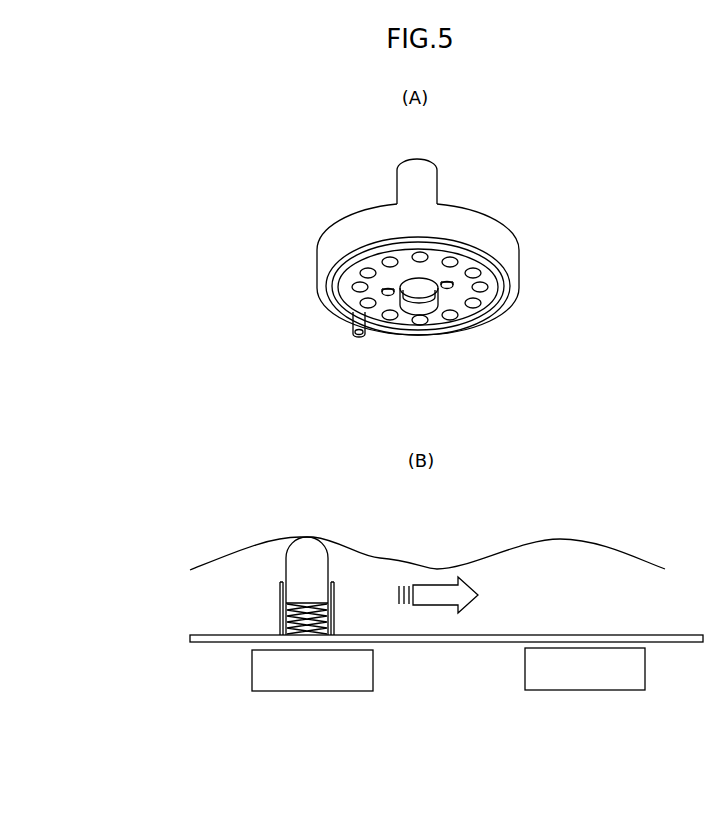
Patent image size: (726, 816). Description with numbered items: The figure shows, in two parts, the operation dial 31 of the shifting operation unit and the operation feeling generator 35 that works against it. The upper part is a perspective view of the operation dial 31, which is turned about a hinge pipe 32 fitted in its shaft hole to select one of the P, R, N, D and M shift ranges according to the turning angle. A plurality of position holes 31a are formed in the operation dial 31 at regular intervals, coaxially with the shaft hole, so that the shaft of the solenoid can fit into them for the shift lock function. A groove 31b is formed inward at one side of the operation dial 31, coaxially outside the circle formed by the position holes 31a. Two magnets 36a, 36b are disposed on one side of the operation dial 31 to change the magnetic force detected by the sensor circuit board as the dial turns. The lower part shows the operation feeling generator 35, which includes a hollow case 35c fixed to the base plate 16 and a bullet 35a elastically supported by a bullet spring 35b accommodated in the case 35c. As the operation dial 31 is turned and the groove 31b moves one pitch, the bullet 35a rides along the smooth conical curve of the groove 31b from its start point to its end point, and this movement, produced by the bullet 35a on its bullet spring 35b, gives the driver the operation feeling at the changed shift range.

The operation dial 31 is at (508, 248).
The position holes 31a is at (456, 264).
The groove 31b is at (518, 293).
The hinge pipe 32 is at (425, 183).
The operation feeling generator 35 is at (355, 337).
The bullet 35a is at (284, 563).
The bullet spring 35b is at (290, 628).
The hollow case 35c is at (280, 591).
The magnet 36a is at (388, 296).
The magnet 36b is at (448, 289).
The base plate 16 is at (677, 638).